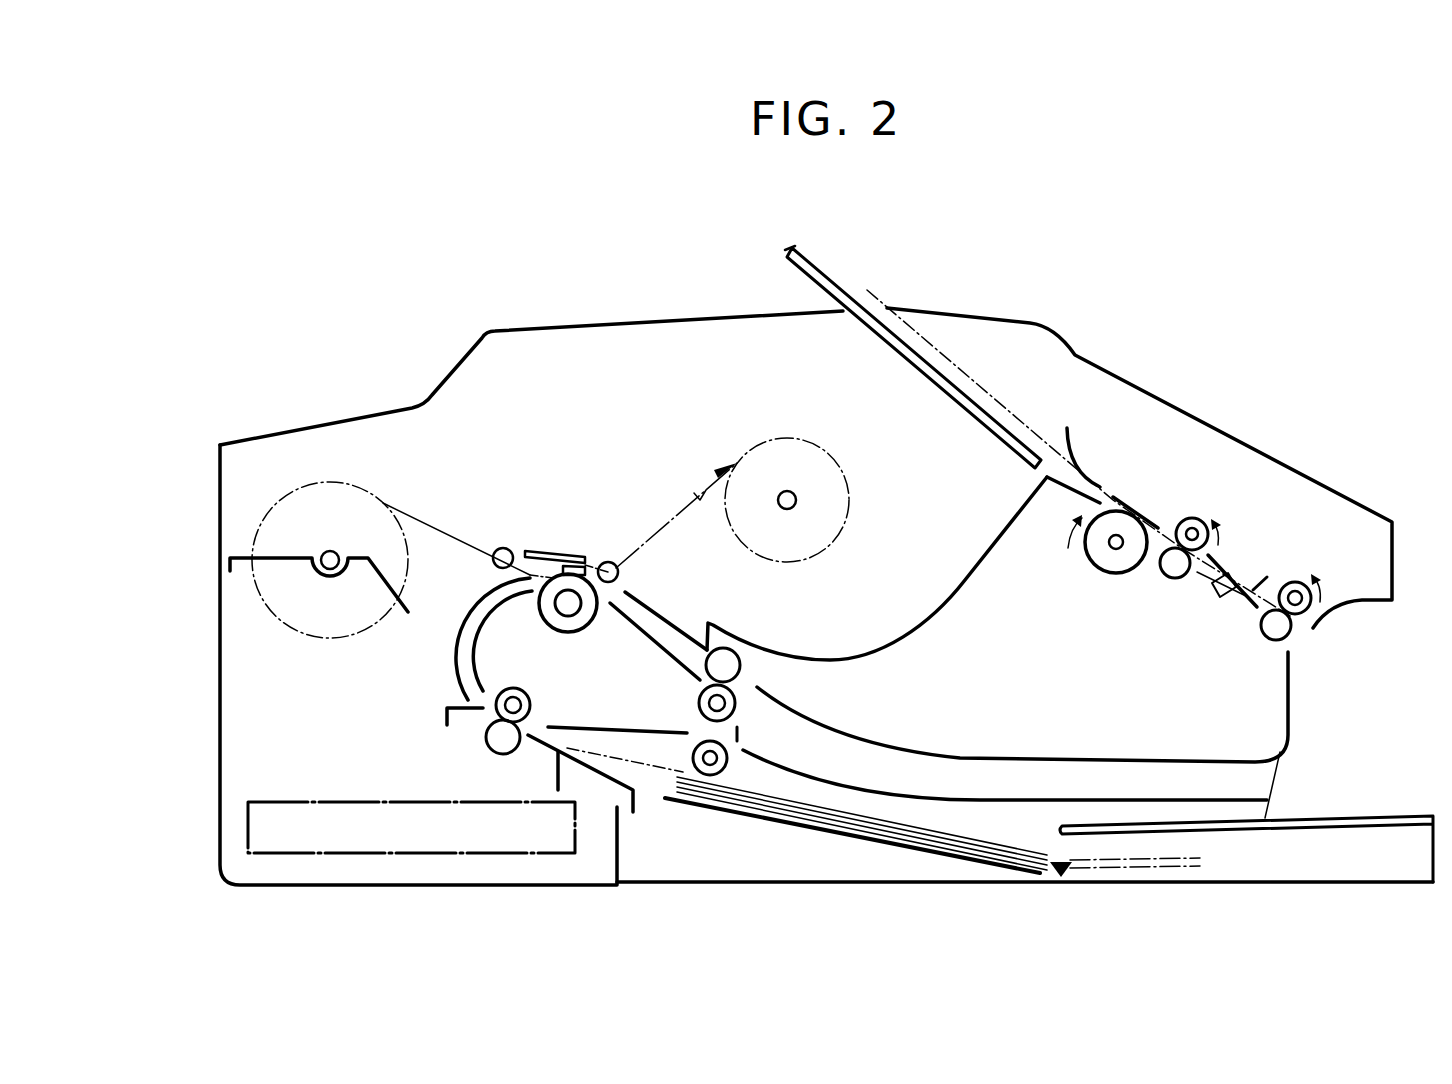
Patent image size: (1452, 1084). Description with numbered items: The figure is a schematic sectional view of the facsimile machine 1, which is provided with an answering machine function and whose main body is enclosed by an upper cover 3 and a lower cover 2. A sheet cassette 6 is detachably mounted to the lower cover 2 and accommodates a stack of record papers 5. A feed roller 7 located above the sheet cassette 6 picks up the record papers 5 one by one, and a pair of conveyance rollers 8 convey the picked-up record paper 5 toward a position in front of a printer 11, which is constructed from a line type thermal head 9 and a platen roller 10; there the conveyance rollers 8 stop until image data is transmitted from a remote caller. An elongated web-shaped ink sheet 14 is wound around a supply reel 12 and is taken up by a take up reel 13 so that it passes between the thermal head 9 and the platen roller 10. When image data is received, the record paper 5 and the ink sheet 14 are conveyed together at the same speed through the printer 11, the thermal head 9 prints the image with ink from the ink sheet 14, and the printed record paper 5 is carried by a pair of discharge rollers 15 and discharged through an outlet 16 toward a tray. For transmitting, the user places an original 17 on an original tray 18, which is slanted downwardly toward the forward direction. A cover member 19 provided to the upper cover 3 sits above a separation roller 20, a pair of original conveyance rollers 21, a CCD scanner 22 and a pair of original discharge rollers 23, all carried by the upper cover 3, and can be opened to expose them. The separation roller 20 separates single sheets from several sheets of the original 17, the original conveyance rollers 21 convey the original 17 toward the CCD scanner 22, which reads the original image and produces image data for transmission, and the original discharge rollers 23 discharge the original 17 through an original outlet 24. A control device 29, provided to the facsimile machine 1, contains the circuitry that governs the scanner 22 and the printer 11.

The facsimile machine 1 is at (795, 544).
The lower cover 2 is at (220, 712).
The upper cover 3 is at (558, 323).
The record papers 5 is at (925, 833).
The sheet cassette 6 is at (1312, 868).
The feed roller 7 is at (708, 772).
The pair of conveyance rollers 8 is at (500, 742).
The line type thermal head 9 is at (575, 558).
The platen roller 10 is at (576, 624).
The printer 11 is at (541, 547).
The supply reel 12 is at (318, 572).
The take up reel 13 is at (798, 505).
The ink sheet 14 is at (645, 548).
The pair of discharge rollers 15 is at (737, 712).
The outlet 16 is at (1260, 777).
The original 17 is at (925, 340).
The original tray 18 is at (818, 270).
The cover member 19 is at (1073, 357).
The separation roller 20 is at (1100, 555).
The pair of original conveyance rollers 21 is at (1177, 550).
The CCD scanner 22 is at (1217, 590).
The pair of original discharge rollers 23 is at (1290, 624).
The original outlet 24 is at (1306, 612).
The control device 29 is at (288, 812).